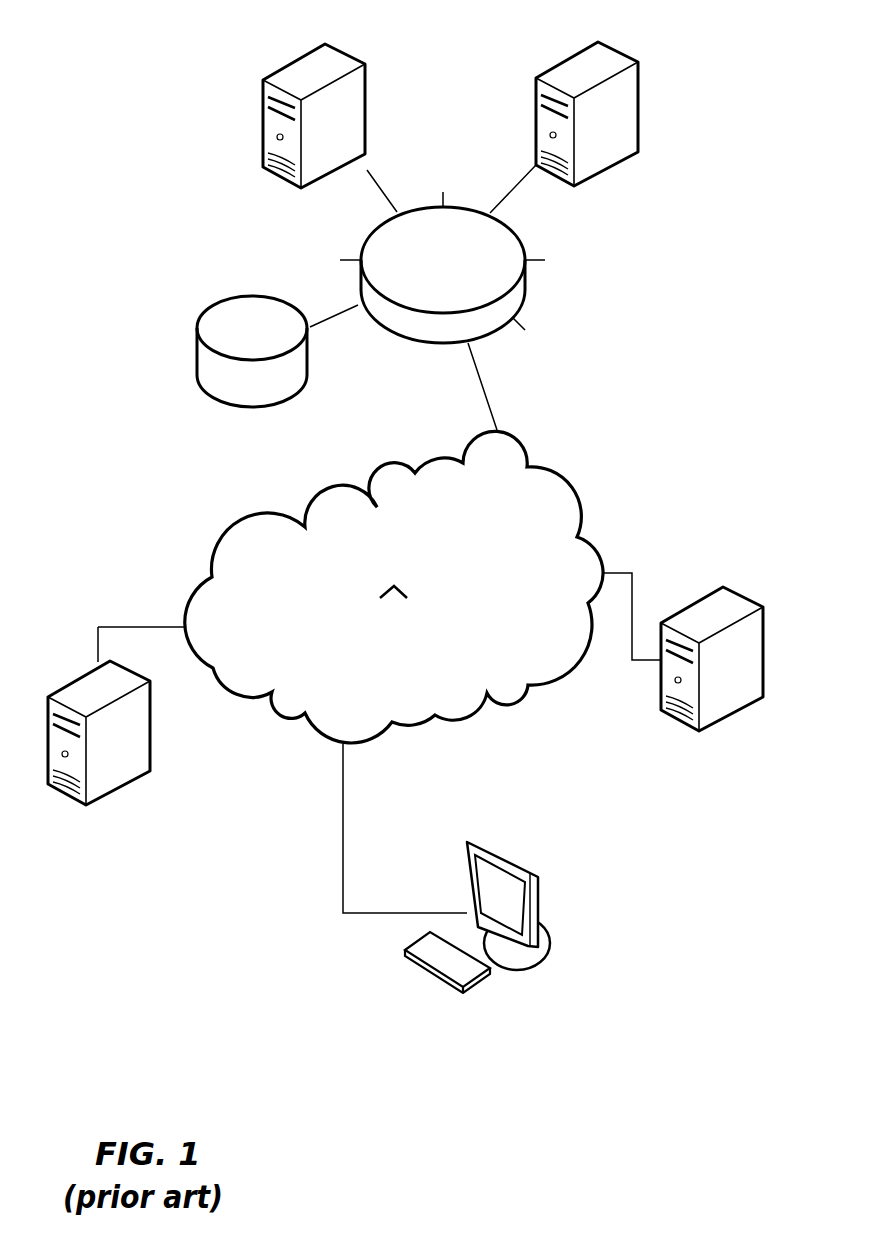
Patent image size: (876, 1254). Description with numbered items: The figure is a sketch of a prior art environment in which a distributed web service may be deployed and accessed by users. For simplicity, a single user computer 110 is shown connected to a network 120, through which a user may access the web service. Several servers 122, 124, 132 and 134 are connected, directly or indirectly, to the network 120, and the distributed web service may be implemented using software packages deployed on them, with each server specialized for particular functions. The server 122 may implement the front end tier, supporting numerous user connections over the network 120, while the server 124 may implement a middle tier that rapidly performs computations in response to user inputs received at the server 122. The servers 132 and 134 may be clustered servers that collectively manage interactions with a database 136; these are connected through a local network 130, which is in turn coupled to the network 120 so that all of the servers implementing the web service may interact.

The user computer 110 is at (557, 950).
The network 120 is at (580, 517).
The server 122 is at (750, 707).
The server 124 is at (148, 770).
The local network 130 is at (527, 283).
The server 132 is at (628, 57).
The server 134 is at (360, 56).
The database 136 is at (213, 308).